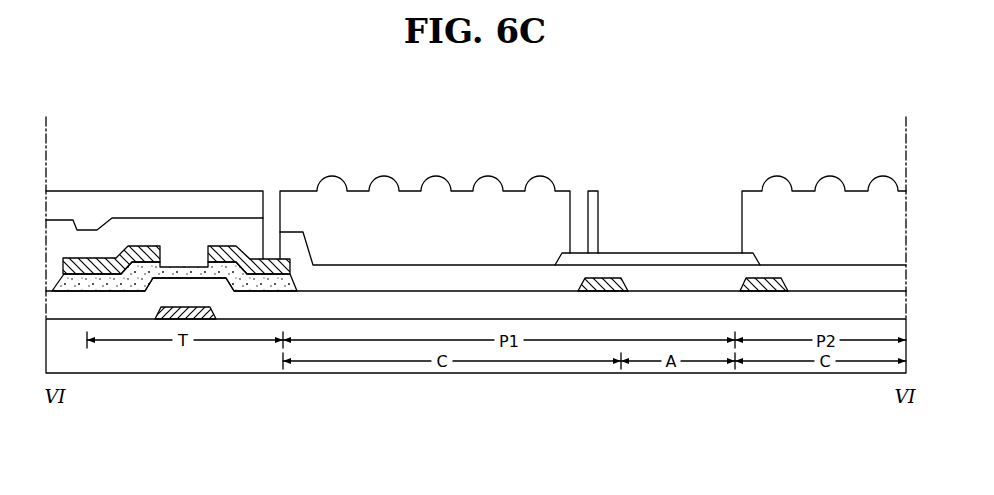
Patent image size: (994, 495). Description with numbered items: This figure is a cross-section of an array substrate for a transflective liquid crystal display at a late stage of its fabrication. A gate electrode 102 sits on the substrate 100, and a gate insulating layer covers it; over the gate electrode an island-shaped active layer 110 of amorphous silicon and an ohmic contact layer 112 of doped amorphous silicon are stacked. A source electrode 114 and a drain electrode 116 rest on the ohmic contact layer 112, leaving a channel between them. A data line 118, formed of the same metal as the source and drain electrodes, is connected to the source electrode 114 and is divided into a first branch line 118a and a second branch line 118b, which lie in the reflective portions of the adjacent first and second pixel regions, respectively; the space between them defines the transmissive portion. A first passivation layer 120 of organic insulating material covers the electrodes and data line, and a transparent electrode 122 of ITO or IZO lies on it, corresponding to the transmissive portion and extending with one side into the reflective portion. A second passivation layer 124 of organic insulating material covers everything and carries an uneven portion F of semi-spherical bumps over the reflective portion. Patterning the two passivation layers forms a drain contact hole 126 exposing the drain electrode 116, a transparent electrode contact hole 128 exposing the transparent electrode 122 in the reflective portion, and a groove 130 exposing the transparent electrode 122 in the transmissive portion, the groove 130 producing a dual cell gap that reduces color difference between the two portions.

The substrate 100 is at (232, 366).
The gate electrode 102 is at (210, 319).
The active layer 110 is at (122, 291).
The ohmic contact layer 112 is at (222, 246).
The source electrode 114 is at (135, 246).
The drain electrode 116 is at (246, 258).
The data line 118 is at (597, 425).
The first branch line 118a is at (607, 292).
The second branch line 118b is at (770, 292).
The first passivation layer 120 is at (183, 219).
The transparent electrode 122 is at (648, 256).
The second passivation layer 124 is at (77, 191).
The drain contact hole 126 is at (272, 193).
The transparent electrode contact hole 128 is at (584, 197).
The groove 130 is at (697, 197).
The uneven portion F is at (443, 170).